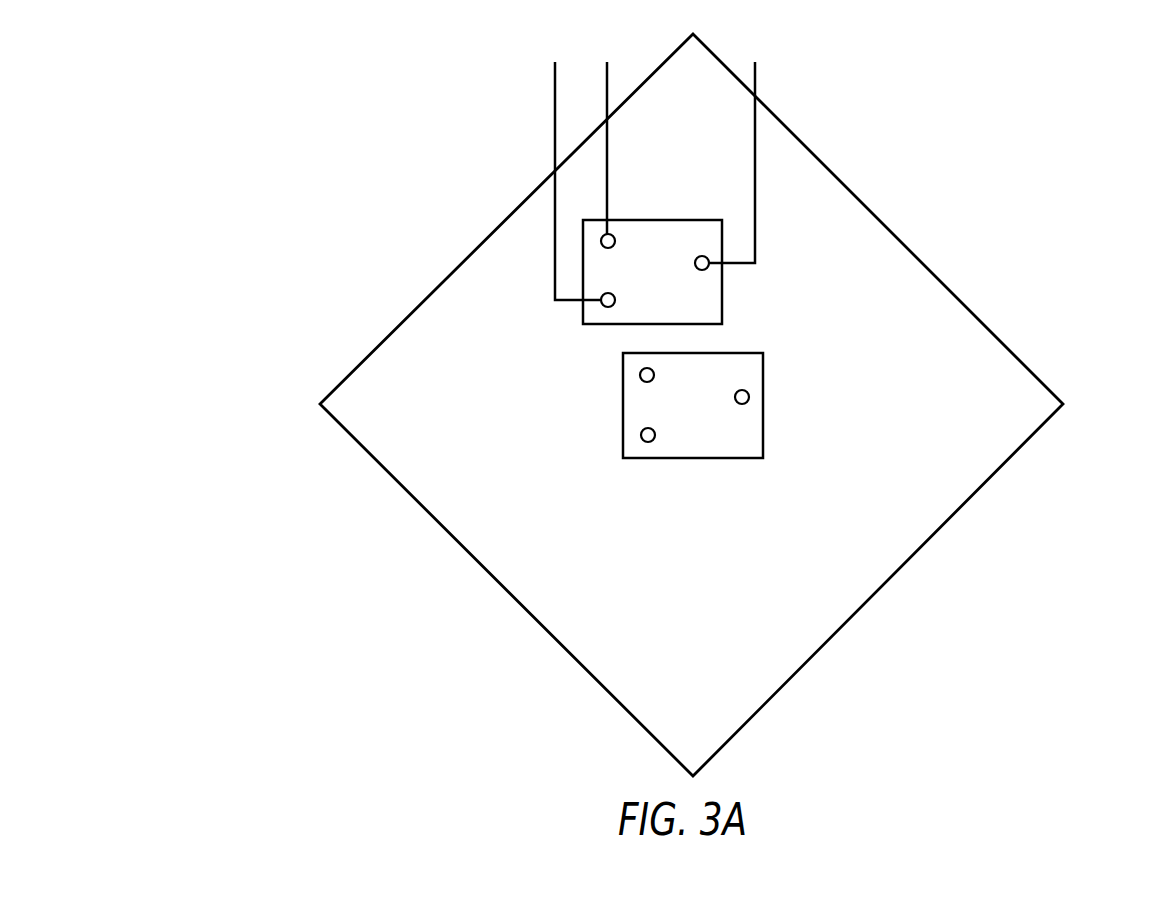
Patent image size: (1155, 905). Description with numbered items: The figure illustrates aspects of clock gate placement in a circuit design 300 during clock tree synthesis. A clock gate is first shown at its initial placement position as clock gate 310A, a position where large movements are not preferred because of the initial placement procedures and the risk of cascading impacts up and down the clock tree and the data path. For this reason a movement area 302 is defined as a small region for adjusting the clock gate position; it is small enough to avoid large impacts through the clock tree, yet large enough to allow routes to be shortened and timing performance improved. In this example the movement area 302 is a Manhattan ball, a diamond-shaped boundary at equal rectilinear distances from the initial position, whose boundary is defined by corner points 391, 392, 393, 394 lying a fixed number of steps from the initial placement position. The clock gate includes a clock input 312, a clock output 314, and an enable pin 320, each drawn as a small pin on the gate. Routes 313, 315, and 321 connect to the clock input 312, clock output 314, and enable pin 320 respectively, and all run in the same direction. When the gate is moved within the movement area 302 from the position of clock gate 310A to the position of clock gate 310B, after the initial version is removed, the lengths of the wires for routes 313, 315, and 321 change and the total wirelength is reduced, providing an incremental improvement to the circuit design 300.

The circuit design 300 is at (120, 63).
The movement area 302 is at (470, 560).
The clock gate in initial placement position 310A is at (715, 460).
The clock gate in moved position 310B is at (583, 322).
The clock input 312 is at (640, 437).
The route to clock input 313 is at (553, 120).
The clock output 314 is at (750, 397).
The route to clock output 315 is at (757, 82).
The enable pin 320 is at (632, 378).
The route to enable pin 321 is at (608, 73).
The corner point 391 is at (698, 36).
The corner point 392 is at (320, 403).
The corner point 393 is at (1064, 405).
The corner point 394 is at (696, 777).